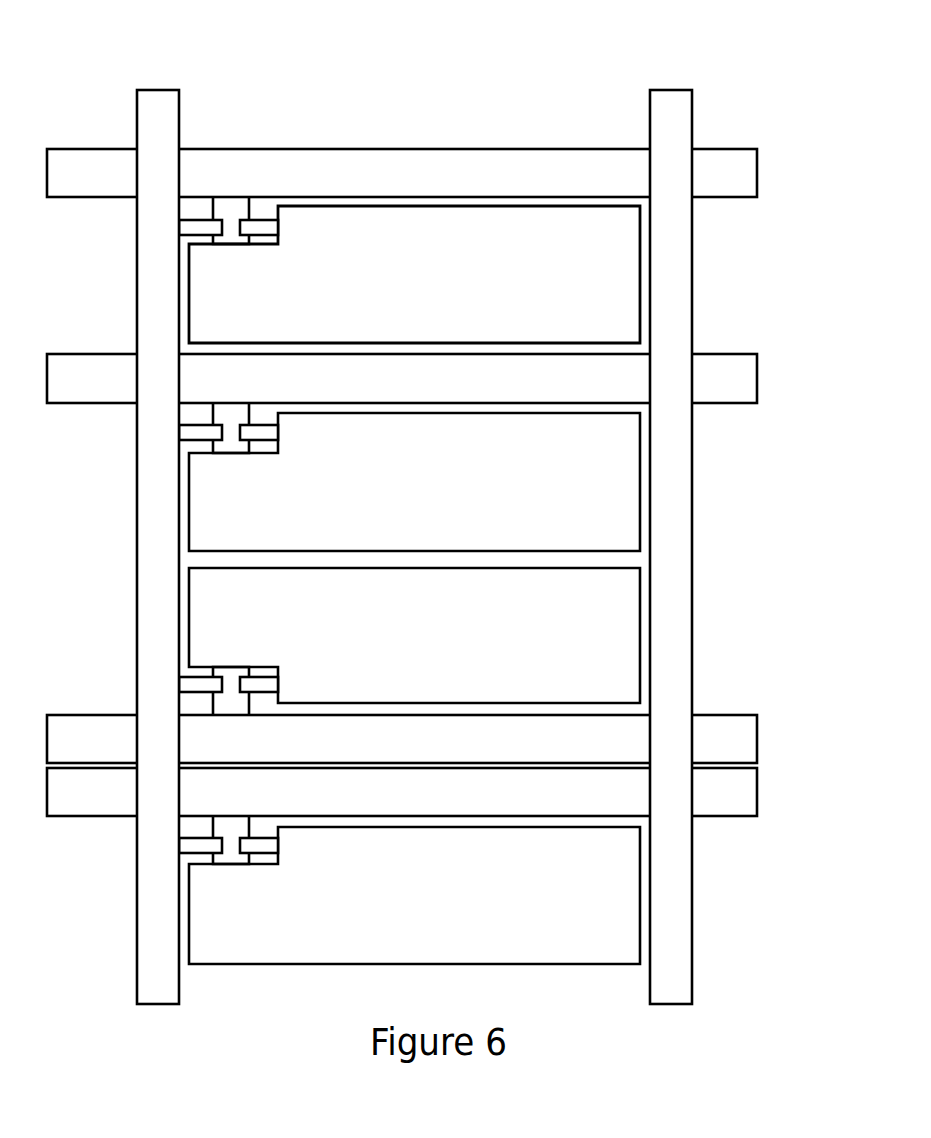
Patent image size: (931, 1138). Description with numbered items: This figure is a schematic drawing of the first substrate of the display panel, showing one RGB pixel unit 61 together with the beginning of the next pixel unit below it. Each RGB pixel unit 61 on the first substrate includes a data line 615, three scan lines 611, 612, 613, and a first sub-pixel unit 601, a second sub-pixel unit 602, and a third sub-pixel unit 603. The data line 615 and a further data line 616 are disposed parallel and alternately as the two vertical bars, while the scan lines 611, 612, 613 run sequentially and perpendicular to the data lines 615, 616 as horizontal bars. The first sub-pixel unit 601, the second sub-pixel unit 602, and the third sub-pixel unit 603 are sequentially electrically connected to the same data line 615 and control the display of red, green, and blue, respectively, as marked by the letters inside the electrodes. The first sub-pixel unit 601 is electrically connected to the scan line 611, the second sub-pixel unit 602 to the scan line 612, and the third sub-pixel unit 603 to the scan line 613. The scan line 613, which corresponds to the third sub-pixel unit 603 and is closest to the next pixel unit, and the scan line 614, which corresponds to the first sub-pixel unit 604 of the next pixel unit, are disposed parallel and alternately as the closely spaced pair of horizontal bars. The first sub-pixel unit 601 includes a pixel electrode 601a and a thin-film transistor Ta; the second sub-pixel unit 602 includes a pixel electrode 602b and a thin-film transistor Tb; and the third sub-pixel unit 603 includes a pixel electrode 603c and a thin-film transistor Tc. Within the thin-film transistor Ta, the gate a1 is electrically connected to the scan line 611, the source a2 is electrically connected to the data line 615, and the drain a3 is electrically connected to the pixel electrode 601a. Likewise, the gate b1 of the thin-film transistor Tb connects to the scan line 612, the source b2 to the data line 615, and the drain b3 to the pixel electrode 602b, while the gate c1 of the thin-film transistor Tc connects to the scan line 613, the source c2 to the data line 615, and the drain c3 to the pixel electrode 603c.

The RGB pixel unit 61 is at (426, 519).
The scan line 611 is at (762, 180).
The scan line 612 is at (748, 385).
The scan line 613 is at (745, 733).
The scan line 614 is at (745, 803).
The data line 615 is at (155, 118).
The data line 616 is at (668, 118).
The first sub-pixel unit 601 is at (466, 251).
The second sub-pixel unit 602 is at (465, 460).
The third sub-pixel unit 603 is at (465, 661).
The first sub-pixel unit of the next pixel unit 604 is at (642, 892).
The pixel electrode 601a is at (414, 274).
The pixel electrode 602b is at (414, 482).
The pixel electrode 603c is at (414, 635).
The thin-film transistor Ta is at (397, 251).
The thin-film transistor Tb is at (396, 460).
The thin-film transistor Tc is at (396, 661).
The gate a1 is at (227, 205).
The source a2 is at (197, 230).
The drain a3 is at (272, 237).
The gate b1 is at (227, 412).
The source b2 is at (203, 437).
The drain b3 is at (270, 437).
The gate c1 is at (227, 702).
The source c2 is at (203, 685).
The drain c3 is at (262, 685).